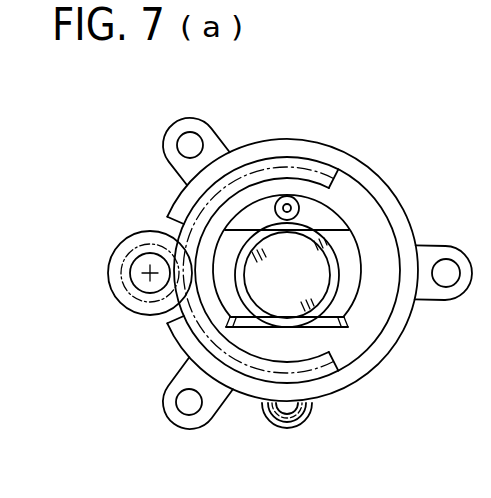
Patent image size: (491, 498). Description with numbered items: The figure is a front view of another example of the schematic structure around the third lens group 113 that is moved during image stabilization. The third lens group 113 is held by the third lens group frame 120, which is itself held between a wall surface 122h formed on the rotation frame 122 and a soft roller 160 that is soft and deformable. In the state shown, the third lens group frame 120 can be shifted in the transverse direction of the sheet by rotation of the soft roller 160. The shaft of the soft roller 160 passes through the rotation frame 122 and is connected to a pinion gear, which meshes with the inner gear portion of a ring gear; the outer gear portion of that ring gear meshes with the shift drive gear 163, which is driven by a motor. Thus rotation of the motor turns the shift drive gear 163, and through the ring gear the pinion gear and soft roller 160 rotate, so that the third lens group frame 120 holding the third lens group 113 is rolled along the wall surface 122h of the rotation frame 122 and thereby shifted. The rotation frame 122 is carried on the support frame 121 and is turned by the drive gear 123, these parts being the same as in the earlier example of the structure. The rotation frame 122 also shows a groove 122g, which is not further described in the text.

The third lens group 113 is at (297, 245).
The third lens group frame 120 is at (242, 268).
The support frame 121 is at (385, 195).
The rotation frame 122 is at (363, 343).
The groove of base member 122g is at (253, 378).
The wall surface 122h is at (385, 315).
The drive gear 123 is at (130, 250).
The soft roller 160 is at (288, 196).
The shift drive gear 163 is at (305, 408).